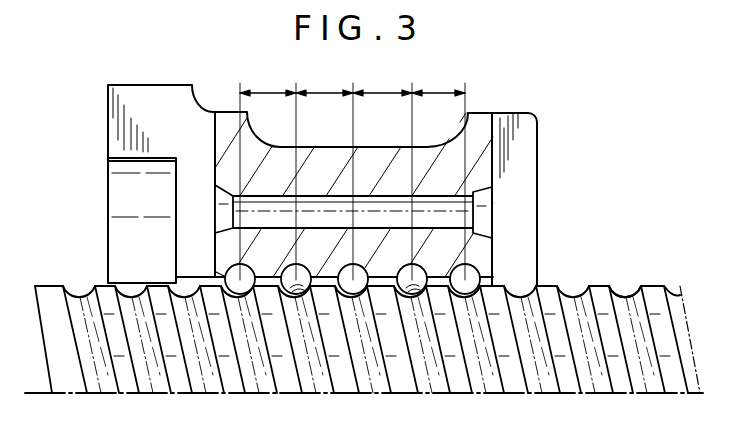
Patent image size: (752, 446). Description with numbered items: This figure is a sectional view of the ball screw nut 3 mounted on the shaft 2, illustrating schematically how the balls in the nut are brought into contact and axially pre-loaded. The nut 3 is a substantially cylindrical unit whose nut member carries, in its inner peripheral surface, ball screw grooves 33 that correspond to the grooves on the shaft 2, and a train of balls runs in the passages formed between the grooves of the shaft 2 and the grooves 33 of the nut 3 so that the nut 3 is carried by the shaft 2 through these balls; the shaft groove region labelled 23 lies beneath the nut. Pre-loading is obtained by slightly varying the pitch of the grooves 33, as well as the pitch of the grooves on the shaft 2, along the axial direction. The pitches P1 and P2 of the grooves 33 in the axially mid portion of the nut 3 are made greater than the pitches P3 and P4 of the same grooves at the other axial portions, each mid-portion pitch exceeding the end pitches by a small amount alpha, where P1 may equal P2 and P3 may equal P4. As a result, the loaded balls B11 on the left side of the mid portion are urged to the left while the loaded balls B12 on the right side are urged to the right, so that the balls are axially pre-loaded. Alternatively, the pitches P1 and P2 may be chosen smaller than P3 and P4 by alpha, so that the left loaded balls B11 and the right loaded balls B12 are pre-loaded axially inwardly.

The shaft 2 is at (670, 367).
The helical ball groove of screw shaft 23 is at (626, 307).
The ball screw nut 3 is at (522, 198).
The ball screw grooves 33 is at (216, 278).
The left loaded balls B11 is at (297, 296).
The right loaded balls B12 is at (413, 296).
The pitch of the grooves in the axially mid portion P1 is at (324, 174).
The pitch of the grooves in the axially mid portion P2 is at (382, 174).
The pitch of the grooves at other axial portions P3 is at (268, 174).
The pitch of the grooves at other axial portions P4 is at (438, 174).